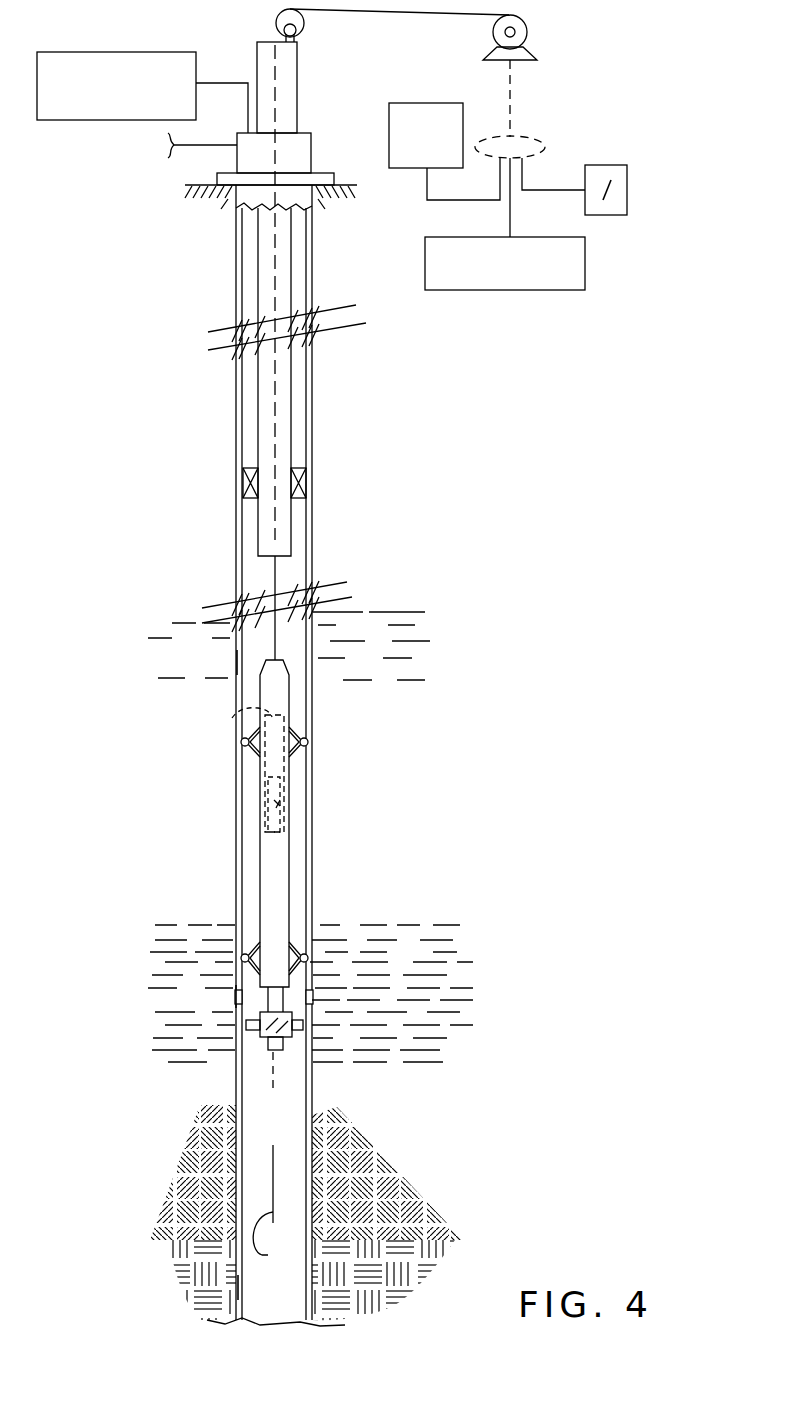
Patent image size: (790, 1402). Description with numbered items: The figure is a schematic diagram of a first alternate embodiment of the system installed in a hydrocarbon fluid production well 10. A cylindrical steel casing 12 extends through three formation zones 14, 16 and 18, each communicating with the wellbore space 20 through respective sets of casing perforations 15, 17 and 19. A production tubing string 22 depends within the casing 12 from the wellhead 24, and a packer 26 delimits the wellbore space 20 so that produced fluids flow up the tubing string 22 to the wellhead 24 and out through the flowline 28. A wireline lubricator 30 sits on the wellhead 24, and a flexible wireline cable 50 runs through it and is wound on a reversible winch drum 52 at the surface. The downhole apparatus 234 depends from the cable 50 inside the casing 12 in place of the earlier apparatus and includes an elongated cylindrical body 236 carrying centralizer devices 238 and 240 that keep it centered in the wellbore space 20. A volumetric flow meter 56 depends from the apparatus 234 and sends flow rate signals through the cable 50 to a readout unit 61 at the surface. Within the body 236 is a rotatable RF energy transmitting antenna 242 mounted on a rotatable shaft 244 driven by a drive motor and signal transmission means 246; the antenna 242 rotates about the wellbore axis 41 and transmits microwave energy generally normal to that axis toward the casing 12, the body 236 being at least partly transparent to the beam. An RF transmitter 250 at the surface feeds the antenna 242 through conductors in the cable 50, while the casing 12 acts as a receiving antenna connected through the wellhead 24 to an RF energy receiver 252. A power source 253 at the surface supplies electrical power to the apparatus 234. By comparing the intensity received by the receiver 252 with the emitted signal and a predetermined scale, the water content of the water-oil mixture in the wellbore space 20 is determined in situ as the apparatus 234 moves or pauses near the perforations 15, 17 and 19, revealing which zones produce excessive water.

The hydrocarbon fluid production well 10 is at (348, 414).
The casing 12 is at (312, 757).
The formation zone 14 is at (471, 678).
The casing perforations 15 is at (236, 662).
The formation zone 16 is at (484, 1023).
The casing perforations 17 is at (237, 997).
The formation zone 18 is at (449, 1308).
The casing perforations 19 is at (238, 1285).
The wellbore space 20 is at (291, 1124).
The production tubing string 22 is at (292, 440).
The wellhead 24 is at (313, 154).
The packer 26 is at (306, 488).
The flowline 28 is at (205, 148).
The wireline lubricator 30 is at (312, 78).
The longitudinal central axis 41 is at (276, 1241).
The flexible cable 50 is at (410, 15).
The reversible winch drum 52 is at (527, 31).
The volumetric flow meter 56 is at (263, 1037).
The recording and/or readout unit 61 is at (432, 103).
The apparatus 234 is at (300, 868).
The body 236 is at (262, 803).
The centralizer device 238 is at (295, 734).
The centralizer device 240 is at (292, 944).
The rotatable RF energy transmitting antenna 242 is at (278, 806).
The rotatable shaft 244 is at (268, 790).
The drive motor and signal transmission means 246 is at (232, 718).
The RF transmitter 250 is at (520, 298).
The RF energy receiver 252 is at (140, 48).
The power source 253 is at (617, 165).